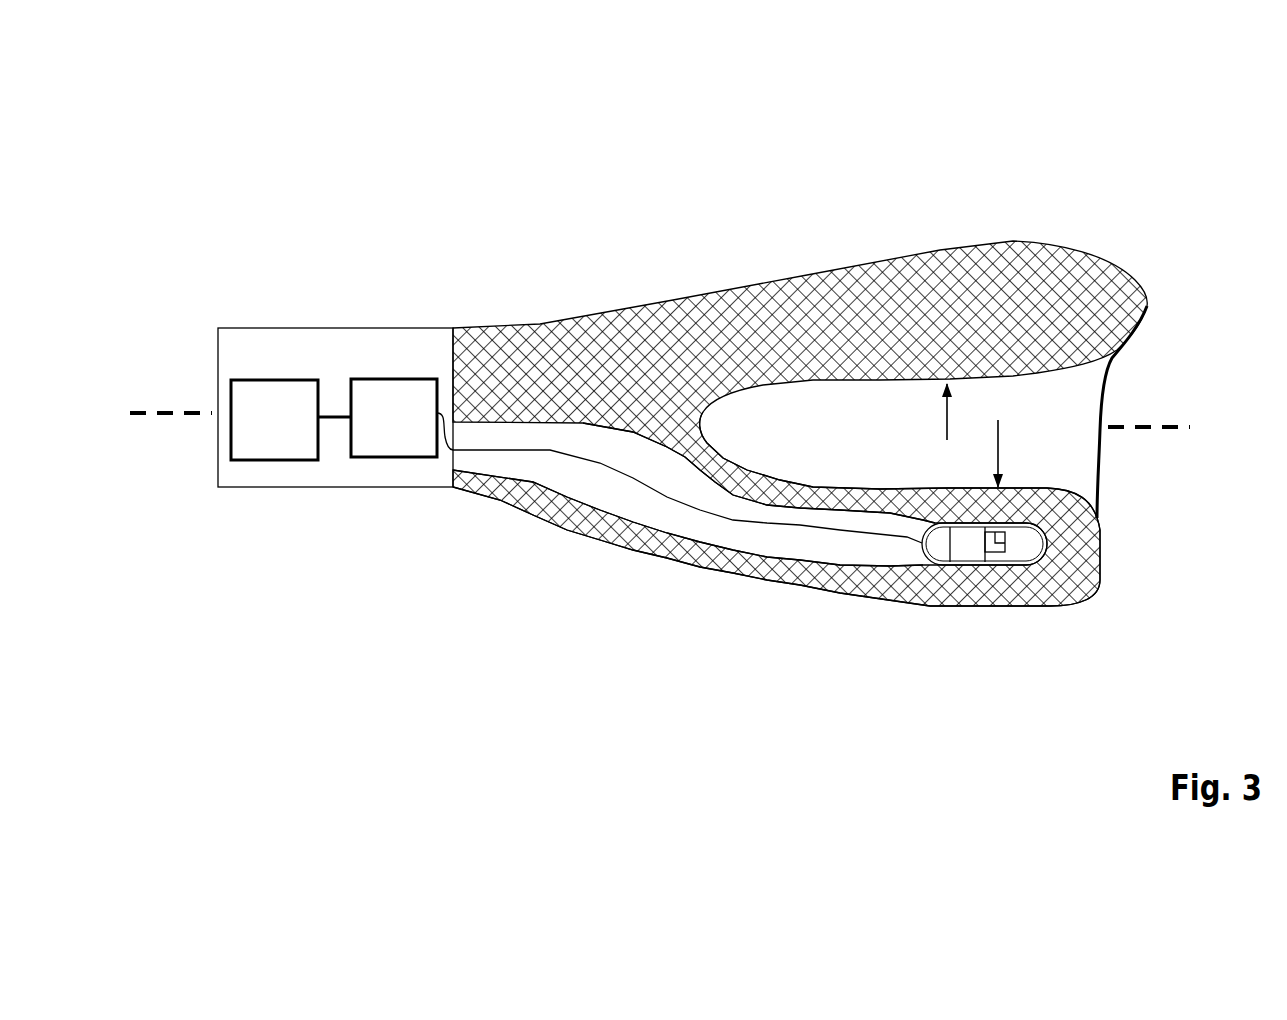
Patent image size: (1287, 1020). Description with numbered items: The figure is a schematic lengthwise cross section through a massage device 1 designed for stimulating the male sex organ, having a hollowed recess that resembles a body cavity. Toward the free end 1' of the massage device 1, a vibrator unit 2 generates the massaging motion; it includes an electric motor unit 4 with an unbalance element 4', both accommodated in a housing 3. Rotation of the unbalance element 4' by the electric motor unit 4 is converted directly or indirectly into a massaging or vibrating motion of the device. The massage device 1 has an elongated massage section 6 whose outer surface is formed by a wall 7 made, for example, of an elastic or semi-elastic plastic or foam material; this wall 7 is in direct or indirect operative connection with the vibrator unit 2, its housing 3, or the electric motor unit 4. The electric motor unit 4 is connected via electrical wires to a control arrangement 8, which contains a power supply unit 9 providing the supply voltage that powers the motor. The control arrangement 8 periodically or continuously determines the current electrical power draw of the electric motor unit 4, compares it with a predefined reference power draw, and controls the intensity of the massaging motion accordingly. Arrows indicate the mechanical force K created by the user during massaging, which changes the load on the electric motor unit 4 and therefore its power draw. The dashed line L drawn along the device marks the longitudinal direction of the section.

The massage device 1 is at (685, 420).
The free end 1' is at (830, 474).
The vibrator unit 2 is at (947, 614).
The housing 3 is at (1032, 567).
The electric motor unit 4 is at (711, 537).
The unbalance element 4' is at (981, 649).
The massage section 6 is at (945, 486).
The wall 7 is at (1035, 518).
The control arrangement 8 is at (377, 418).
The power supply unit 9 is at (274, 420).
The mechanical force K is at (972, 435).
The longitudinal axis L is at (685, 430).